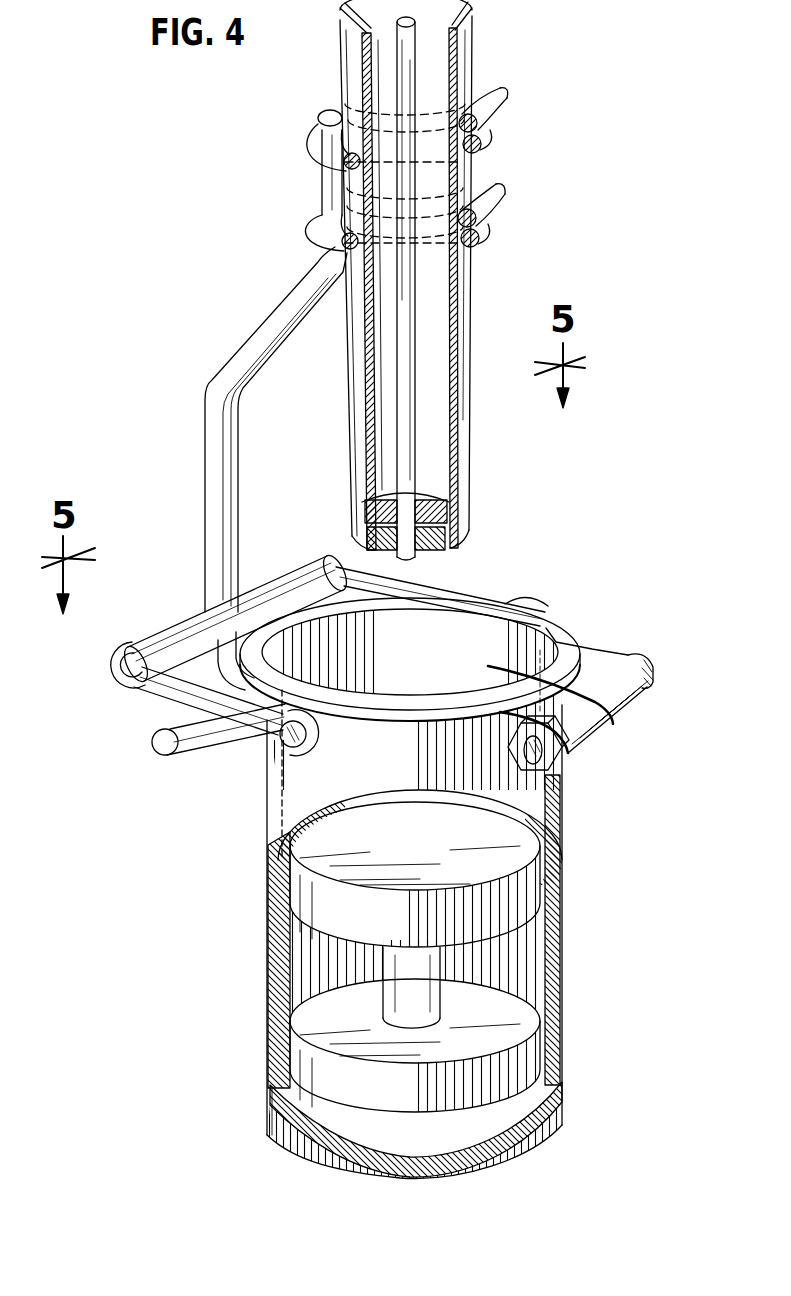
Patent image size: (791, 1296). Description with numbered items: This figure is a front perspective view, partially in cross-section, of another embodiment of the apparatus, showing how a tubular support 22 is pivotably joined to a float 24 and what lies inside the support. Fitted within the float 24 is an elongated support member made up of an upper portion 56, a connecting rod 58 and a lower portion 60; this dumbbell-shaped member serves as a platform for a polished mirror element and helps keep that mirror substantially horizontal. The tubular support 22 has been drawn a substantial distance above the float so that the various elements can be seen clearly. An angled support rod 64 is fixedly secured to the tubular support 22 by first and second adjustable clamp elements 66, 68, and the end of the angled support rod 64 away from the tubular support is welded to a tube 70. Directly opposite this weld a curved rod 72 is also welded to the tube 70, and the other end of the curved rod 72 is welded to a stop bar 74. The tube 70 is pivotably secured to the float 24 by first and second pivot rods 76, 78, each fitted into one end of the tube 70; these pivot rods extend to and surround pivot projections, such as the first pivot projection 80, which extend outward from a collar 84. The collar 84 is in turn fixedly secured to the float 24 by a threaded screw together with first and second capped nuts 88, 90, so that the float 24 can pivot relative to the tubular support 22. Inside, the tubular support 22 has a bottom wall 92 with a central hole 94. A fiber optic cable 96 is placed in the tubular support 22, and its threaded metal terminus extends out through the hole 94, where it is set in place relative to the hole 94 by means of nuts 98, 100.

The tubular support 22 is at (476, 58).
The float 24 is at (566, 903).
The upper portion 56 is at (455, 948).
The connecting rod 58 is at (441, 988).
The lower portion 60 is at (430, 1115).
The angled support rod 64 is at (229, 364).
The first adjustable clamp element 66 is at (506, 112).
The second adjustable clamp element 68 is at (500, 196).
The tube 70 is at (176, 626).
The curved rod 72 is at (183, 700).
The stop bar 74 is at (190, 748).
The first pivot rod 76 is at (130, 680).
The second pivot rod 78 is at (447, 590).
The first pivot projection 80 is at (275, 748).
The collar 84 is at (546, 618).
The first capped nut 88 is at (657, 668).
The second capped nut 90 is at (548, 776).
The bottom wall 92 is at (471, 535).
The central hole 94 is at (456, 543).
The fiber optic cable 96 is at (430, 410).
The nut 98 is at (392, 496).
The nut 100 is at (385, 548).